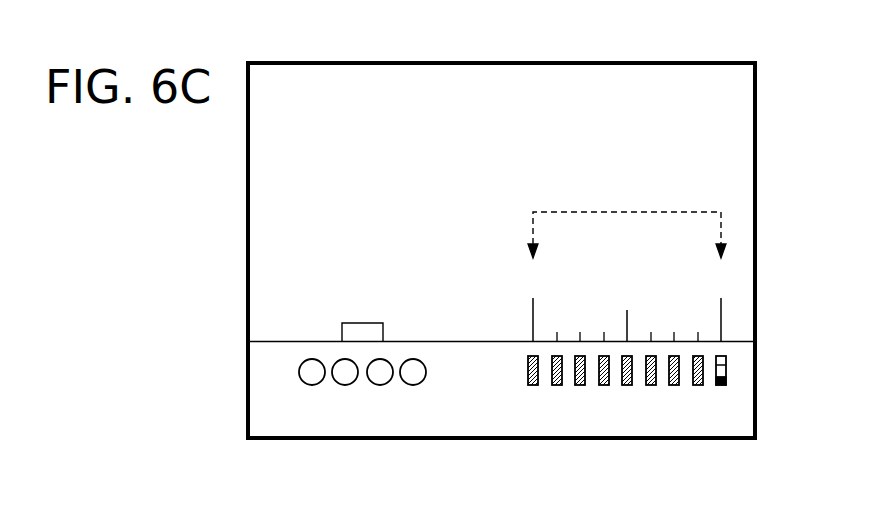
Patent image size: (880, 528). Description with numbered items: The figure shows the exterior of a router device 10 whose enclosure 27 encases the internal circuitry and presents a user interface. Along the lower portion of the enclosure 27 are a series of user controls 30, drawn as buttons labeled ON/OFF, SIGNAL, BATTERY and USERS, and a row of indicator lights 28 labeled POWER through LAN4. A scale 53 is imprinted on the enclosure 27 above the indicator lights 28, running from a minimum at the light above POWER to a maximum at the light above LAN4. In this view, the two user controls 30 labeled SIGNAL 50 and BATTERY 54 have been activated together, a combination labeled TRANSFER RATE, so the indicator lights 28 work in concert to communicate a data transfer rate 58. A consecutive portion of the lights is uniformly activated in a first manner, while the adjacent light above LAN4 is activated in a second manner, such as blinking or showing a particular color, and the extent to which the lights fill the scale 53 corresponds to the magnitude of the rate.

The router device 10 is at (401, 62).
The enclosure 27 is at (757, 172).
The indicator lights 28 is at (651, 467).
The user controls 30 is at (340, 373).
The SIGNAL user control 50 is at (340, 355).
The scale 53 is at (634, 266).
The BATTERY user control 54 is at (386, 354).
The data transfer rate 58 is at (633, 212).